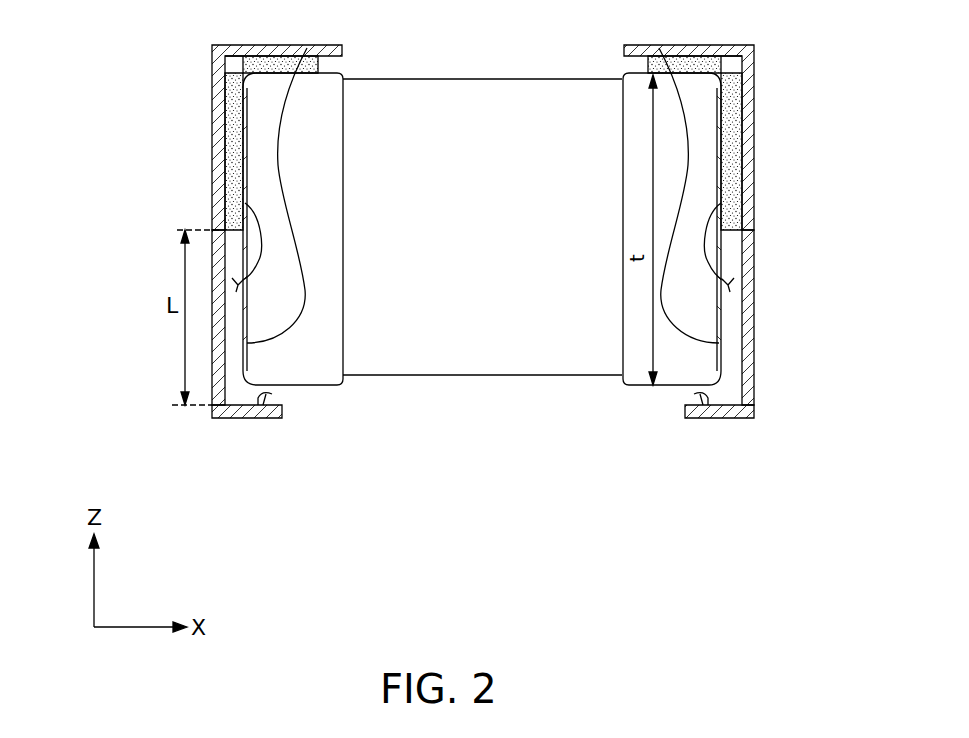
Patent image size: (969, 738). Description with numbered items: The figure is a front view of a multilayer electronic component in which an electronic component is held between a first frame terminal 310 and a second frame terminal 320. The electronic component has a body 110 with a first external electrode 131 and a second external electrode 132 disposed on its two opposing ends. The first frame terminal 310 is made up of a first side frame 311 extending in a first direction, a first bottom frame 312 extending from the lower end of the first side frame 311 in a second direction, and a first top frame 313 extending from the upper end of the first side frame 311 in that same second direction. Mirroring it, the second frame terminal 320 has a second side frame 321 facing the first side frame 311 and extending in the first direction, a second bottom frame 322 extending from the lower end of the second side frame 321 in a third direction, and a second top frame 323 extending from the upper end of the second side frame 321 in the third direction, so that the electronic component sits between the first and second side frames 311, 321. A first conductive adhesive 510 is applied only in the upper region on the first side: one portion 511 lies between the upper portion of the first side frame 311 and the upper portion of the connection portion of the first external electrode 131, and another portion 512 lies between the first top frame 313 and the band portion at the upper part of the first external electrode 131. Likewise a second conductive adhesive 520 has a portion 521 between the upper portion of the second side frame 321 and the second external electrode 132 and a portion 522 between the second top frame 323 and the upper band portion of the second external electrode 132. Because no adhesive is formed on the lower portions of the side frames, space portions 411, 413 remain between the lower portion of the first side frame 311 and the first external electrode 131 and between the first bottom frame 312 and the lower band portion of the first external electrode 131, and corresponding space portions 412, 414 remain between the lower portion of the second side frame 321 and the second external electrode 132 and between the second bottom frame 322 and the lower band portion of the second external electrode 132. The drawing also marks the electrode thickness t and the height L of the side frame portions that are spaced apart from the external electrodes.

The body 110 is at (418, 376).
The first external electrode 131 is at (305, 386).
The second external electrode 132 is at (661, 386).
The first frame terminal 310 is at (184, 250).
The first side frame 311 is at (223, 213).
The first bottom frame 312 is at (255, 412).
The first top frame 313 is at (245, 343).
The second frame terminal 320 is at (781, 250).
The second side frame 321 is at (743, 213).
The second bottom frame 322 is at (711, 412).
The second top frame 323 is at (721, 343).
The space portion 411 is at (245, 203).
The space portion 412 is at (721, 203).
The space portion 413 is at (274, 419).
The space portion 414 is at (701, 419).
The first conductive adhesive 510 is at (184, 142).
The portion of first conductive adhesive 511 is at (236, 125).
The portion of first conductive adhesive 512 is at (283, 70).
The second conductive adhesive 520 is at (783, 142).
The portion of second conductive adhesive 521 is at (731, 125).
The portion of second conductive adhesive 522 is at (686, 70).